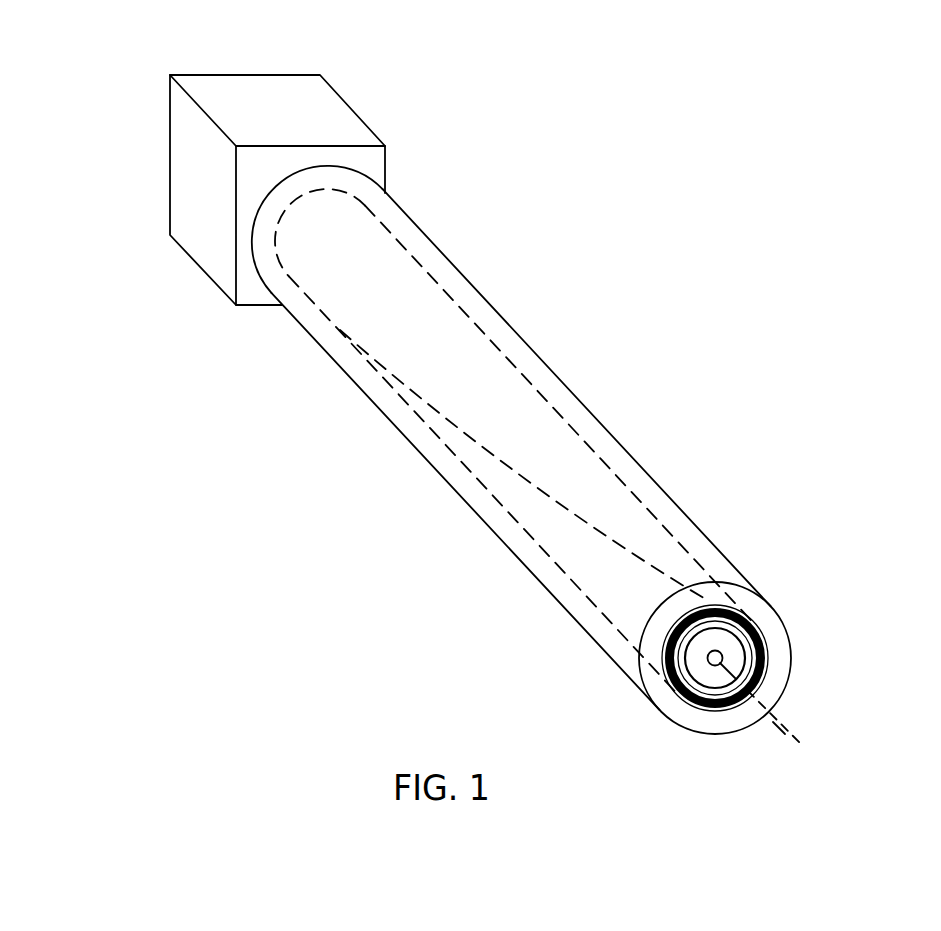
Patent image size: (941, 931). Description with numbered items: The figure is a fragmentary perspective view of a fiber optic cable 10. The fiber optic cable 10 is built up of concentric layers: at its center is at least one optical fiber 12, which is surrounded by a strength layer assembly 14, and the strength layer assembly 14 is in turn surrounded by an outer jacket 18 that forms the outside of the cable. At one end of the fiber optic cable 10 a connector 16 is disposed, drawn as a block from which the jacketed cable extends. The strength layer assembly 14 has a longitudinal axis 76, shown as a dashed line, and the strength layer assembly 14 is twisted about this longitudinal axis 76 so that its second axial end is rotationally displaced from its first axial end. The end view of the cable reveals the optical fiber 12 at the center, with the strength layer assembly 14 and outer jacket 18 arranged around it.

The fiber optic cable 10 is at (47, 180).
The optical fiber 12 is at (760, 625).
The strength layer assembly 14 is at (770, 685).
The connector 16 is at (352, 107).
The outer jacket 18 is at (597, 420).
The longitudinal axis 76 is at (779, 728).